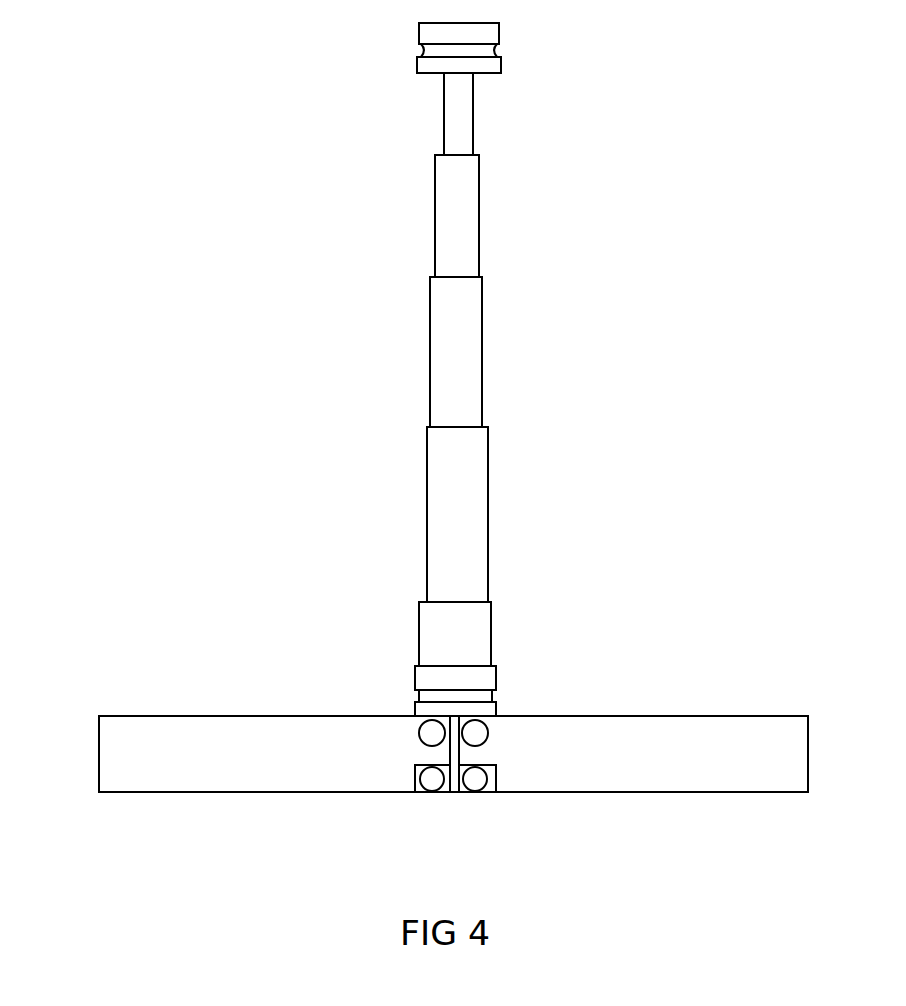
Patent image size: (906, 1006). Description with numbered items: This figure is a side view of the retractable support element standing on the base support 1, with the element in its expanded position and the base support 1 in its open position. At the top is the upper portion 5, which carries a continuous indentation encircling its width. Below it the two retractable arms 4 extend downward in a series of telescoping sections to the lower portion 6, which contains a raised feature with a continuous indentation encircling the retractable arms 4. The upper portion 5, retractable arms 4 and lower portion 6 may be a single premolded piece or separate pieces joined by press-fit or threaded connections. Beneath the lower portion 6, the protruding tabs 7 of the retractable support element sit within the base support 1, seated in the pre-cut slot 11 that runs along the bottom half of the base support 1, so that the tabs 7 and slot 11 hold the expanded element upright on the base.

The base support 1 is at (173, 775).
The retractable arms 4 is at (418, 270).
The upper portion 5 is at (410, 35).
The lower portion 6 is at (410, 675).
The protruding tabs 7 is at (443, 785).
The pre-cut slot 11 is at (495, 792).